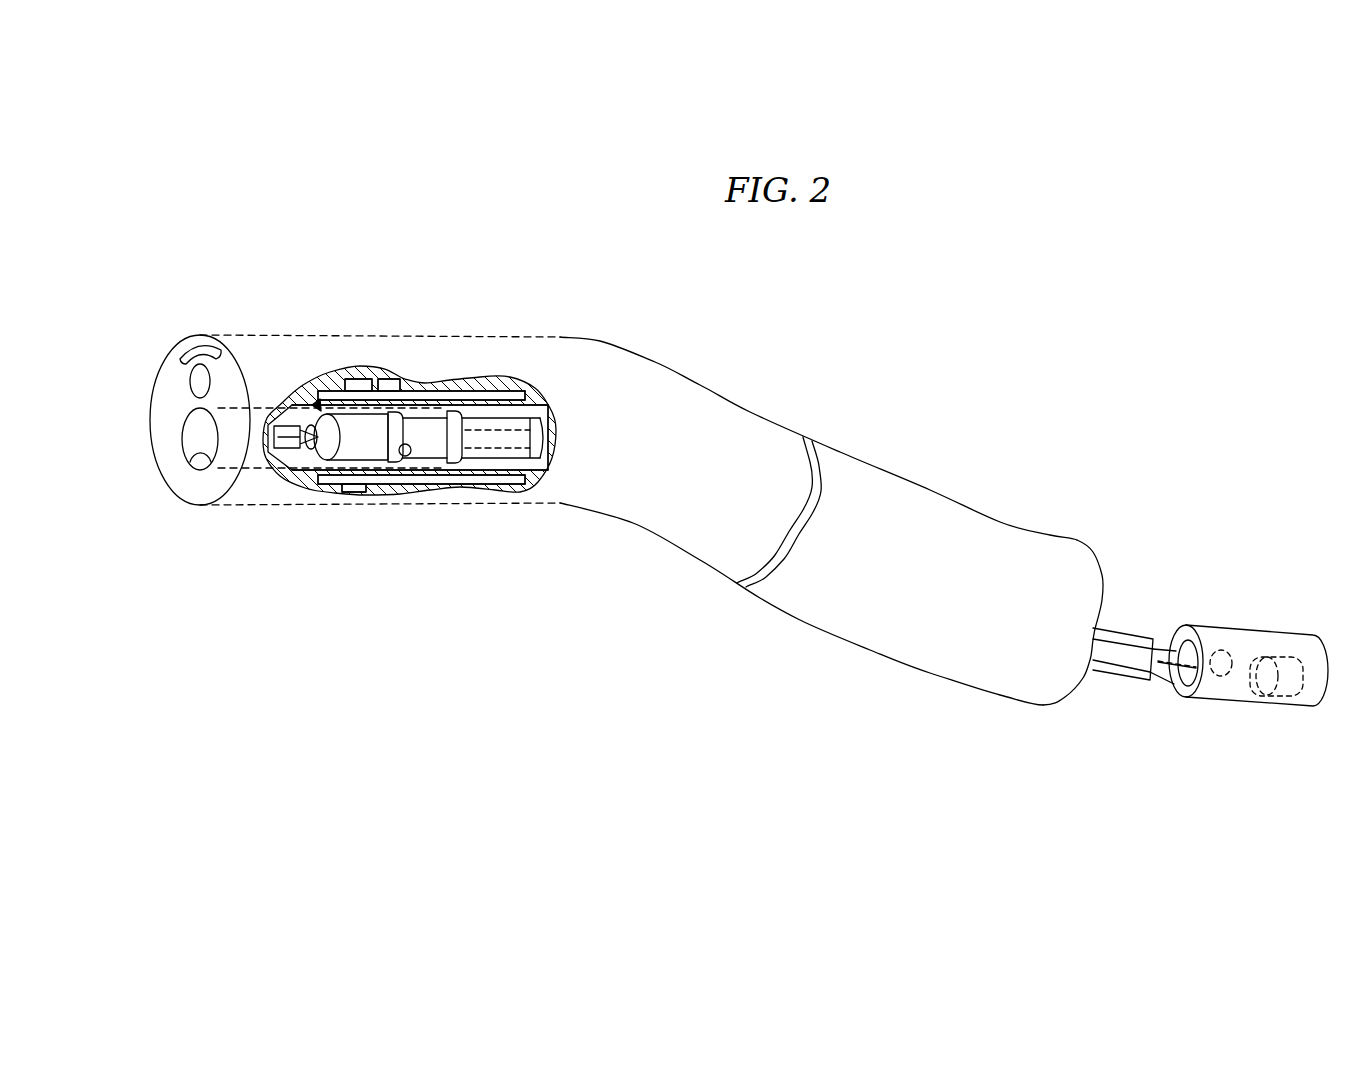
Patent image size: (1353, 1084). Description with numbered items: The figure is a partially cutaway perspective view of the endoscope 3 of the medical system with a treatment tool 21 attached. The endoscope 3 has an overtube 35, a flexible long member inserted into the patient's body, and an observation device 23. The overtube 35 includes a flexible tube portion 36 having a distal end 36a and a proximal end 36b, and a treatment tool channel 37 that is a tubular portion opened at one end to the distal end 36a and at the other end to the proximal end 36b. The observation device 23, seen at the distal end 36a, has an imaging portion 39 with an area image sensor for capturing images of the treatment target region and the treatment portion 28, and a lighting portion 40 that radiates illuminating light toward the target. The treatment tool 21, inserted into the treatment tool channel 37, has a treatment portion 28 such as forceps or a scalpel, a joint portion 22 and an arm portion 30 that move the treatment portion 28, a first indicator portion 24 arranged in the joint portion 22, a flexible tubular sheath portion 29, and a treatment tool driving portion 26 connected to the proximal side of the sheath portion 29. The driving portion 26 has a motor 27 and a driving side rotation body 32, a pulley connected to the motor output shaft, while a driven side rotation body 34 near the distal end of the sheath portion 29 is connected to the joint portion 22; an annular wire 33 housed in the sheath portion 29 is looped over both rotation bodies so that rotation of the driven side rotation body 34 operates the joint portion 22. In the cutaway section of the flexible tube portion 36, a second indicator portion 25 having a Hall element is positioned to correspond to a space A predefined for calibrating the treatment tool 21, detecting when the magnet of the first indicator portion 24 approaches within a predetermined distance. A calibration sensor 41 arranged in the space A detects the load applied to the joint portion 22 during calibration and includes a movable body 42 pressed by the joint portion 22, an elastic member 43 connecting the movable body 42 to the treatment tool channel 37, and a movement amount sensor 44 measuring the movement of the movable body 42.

The endoscope 3 is at (873, 350).
The treatment tool 21 is at (502, 408).
The joint portion 22 is at (411, 458).
The observation device 23 is at (185, 331).
The first indicator portion 24 is at (455, 464).
The second indicator portion 25 is at (382, 385).
The treatment tool driving portion 26 is at (1263, 630).
The motor 27 is at (1290, 660).
The treatment portion 28 is at (293, 428).
The sheath portion 29 is at (1168, 640).
The arm portion 30 is at (378, 465).
The driving side rotation body 32 is at (1224, 651).
The wire 33 is at (1128, 647).
The driven side rotation body 34 is at (462, 434).
The overtube 35 is at (655, 362).
The flexible tube portion 36 is at (263, 496).
The distal end 36a is at (149, 460).
The proximal end 36b is at (1030, 709).
The treatment tool channel 37 is at (201, 490).
The imaging portion 39 is at (190, 380).
The lighting portion 40 is at (174, 348).
The calibration sensor 41 is at (447, 400).
The movable body 42 is at (437, 378).
The elastic member 43 is at (402, 376).
The movement amount sensor 44 is at (346, 388).
The space A is at (316, 402).